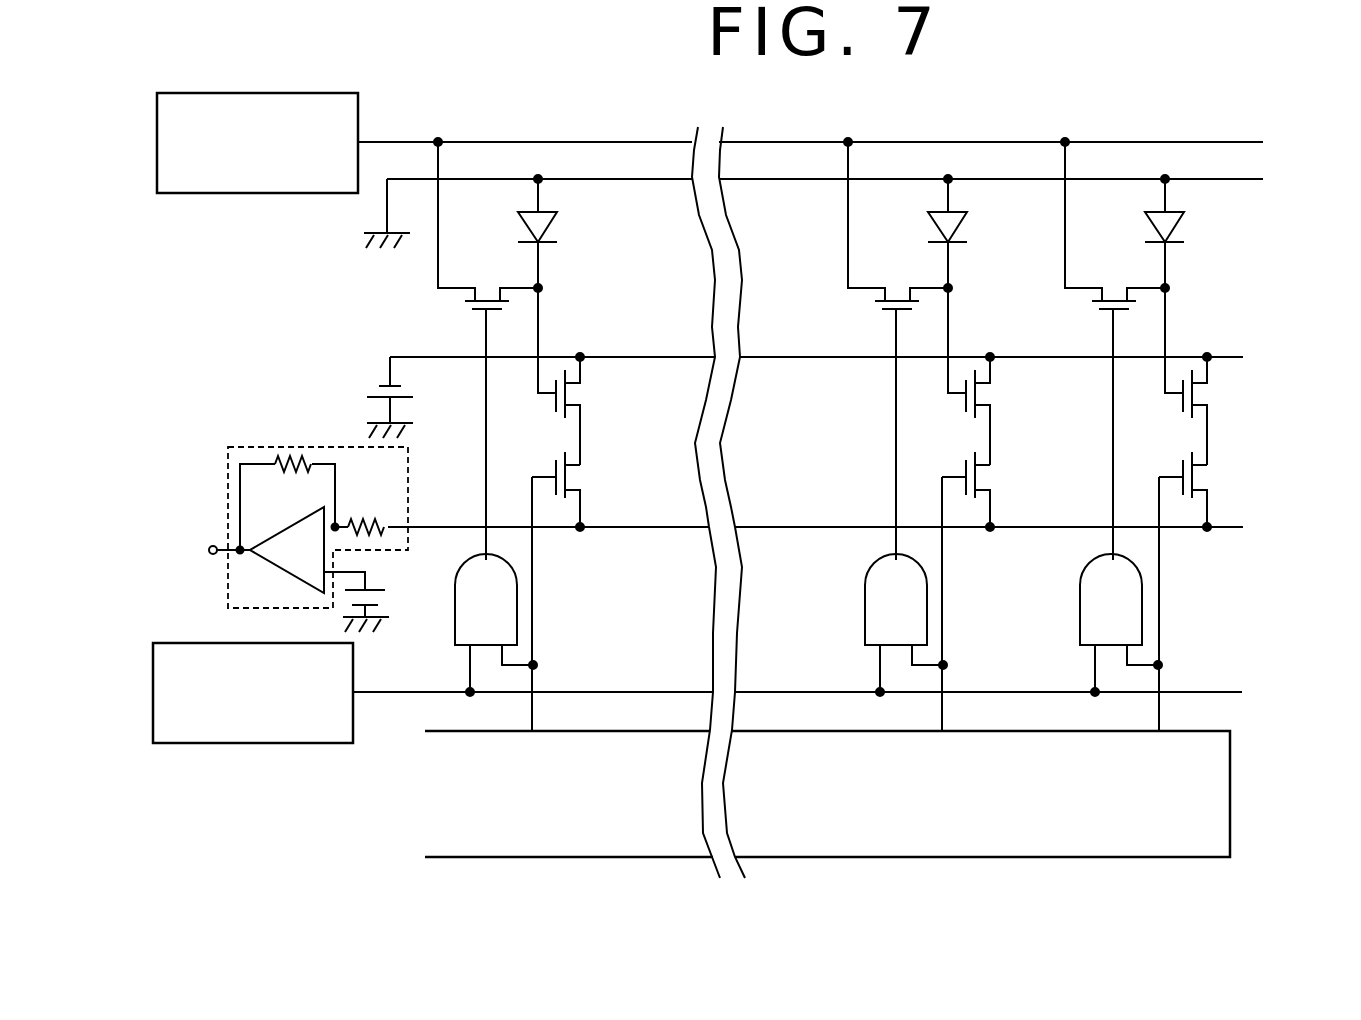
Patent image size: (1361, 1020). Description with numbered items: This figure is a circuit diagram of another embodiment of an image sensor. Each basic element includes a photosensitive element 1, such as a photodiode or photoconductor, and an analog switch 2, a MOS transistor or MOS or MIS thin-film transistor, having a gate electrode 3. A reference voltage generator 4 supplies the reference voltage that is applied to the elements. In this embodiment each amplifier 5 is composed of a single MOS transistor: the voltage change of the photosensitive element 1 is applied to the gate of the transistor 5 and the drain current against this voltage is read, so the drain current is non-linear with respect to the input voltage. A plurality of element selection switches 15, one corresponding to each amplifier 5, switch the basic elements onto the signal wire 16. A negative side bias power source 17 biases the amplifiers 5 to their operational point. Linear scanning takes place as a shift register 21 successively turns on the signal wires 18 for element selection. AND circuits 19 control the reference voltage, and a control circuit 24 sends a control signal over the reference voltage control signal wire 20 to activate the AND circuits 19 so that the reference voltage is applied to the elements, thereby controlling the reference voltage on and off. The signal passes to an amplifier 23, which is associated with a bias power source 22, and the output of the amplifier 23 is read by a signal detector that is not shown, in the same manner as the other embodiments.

The photosensitive element 1 is at (555, 222).
The analog switch 2 is at (512, 303).
The gate electrode 3 is at (1112, 418).
The reference voltage generator 4 is at (358, 97).
The amplifier 5 is at (580, 392).
The element selection switch 15 is at (1200, 477).
The signal wire 16 is at (1243, 527).
The negative side bias power source 17 is at (373, 397).
The signal wire for element selection 18 is at (1160, 621).
The AND circuit 19 is at (1079, 626).
The reference voltage control signal wire 20 is at (1242, 692).
The shift register 21 is at (1230, 797).
The bias power source 22 is at (390, 600).
The amplifier 23 is at (256, 423).
The control circuit 24 is at (287, 745).